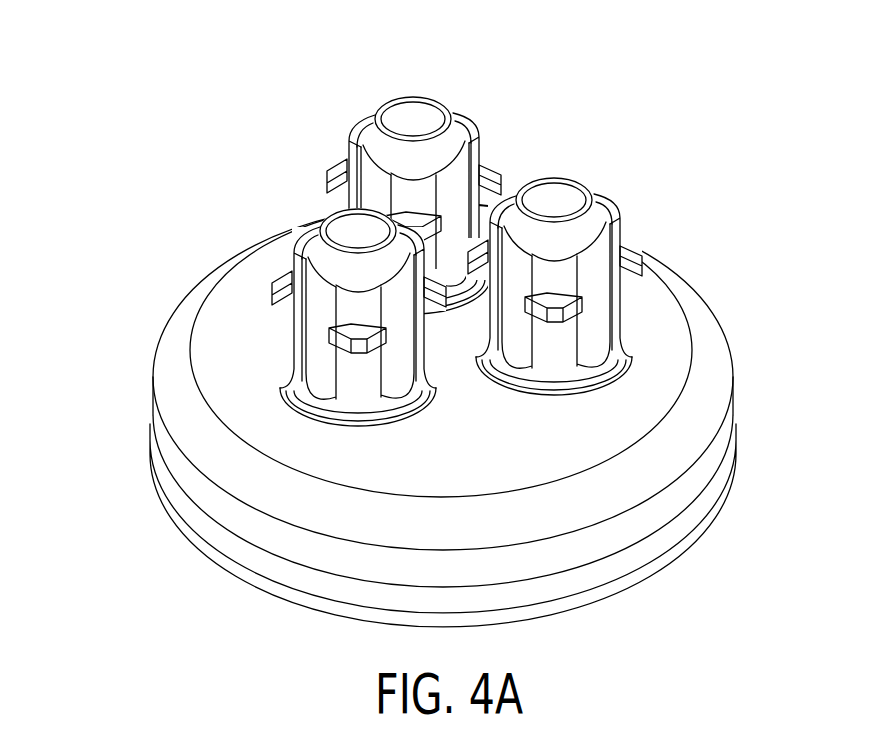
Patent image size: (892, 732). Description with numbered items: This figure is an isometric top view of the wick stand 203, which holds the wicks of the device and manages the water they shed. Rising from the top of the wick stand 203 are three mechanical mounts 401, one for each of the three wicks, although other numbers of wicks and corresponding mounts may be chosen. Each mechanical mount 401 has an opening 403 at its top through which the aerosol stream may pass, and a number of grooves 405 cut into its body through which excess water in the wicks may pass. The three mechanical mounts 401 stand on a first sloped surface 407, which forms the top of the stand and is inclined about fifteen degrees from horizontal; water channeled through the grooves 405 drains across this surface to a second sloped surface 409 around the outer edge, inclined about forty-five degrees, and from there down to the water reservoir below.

The wick stand 203 is at (438, 316).
The mechanical mount 401 is at (457, 216).
The opening 403 is at (418, 108).
The groove 405 is at (375, 148).
The first sloped surface 407 is at (657, 320).
The second sloped surface 409 is at (712, 355).